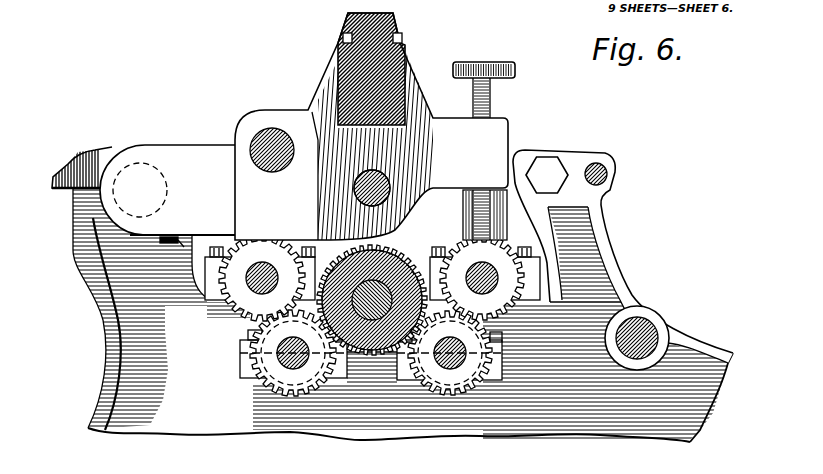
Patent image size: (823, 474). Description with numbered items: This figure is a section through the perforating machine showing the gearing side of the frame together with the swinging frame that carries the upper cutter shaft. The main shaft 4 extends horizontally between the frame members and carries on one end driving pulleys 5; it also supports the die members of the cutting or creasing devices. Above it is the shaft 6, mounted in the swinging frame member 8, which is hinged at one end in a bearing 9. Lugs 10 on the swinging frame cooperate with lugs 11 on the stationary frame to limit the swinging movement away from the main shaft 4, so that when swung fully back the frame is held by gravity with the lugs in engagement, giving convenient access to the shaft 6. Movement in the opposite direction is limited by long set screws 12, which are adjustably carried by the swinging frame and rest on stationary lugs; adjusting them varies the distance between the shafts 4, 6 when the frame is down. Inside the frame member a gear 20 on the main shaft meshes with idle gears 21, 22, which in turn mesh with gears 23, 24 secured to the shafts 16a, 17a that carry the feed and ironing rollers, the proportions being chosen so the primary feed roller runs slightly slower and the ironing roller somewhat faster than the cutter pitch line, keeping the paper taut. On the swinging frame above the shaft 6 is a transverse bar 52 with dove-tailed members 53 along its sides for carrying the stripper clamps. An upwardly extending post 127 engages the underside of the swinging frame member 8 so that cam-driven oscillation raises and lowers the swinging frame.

The main shaft 4 is at (375, 315).
The pulleys 5 is at (613, 263).
The shaft 6 is at (393, 182).
The swinging frame member 8 is at (192, 153).
The bearing 9 is at (142, 178).
The lugs 10 is at (52, 186).
The lugs 11 is at (172, 250).
The set screws 12 is at (493, 96).
The shaft 16a is at (472, 265).
The shaft 17a is at (258, 263).
The gear 20 is at (372, 250).
The idle gear 21 is at (270, 367).
The idle gear 22 is at (477, 383).
The gear 23 is at (247, 297).
The gear 24 is at (453, 275).
The transverse bar 52 is at (370, 72).
The dove-tailed members 53 is at (343, 35).
The post 127 is at (520, 195).